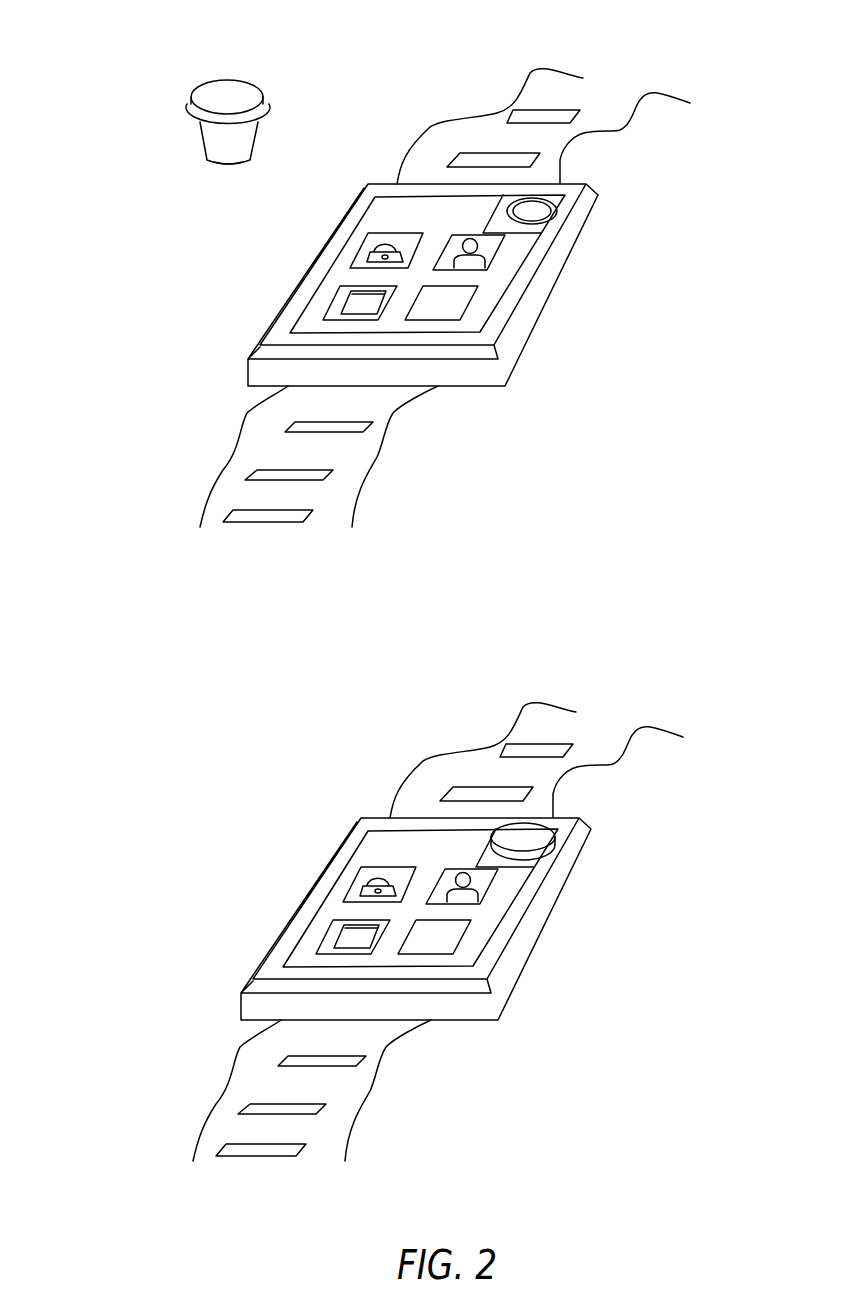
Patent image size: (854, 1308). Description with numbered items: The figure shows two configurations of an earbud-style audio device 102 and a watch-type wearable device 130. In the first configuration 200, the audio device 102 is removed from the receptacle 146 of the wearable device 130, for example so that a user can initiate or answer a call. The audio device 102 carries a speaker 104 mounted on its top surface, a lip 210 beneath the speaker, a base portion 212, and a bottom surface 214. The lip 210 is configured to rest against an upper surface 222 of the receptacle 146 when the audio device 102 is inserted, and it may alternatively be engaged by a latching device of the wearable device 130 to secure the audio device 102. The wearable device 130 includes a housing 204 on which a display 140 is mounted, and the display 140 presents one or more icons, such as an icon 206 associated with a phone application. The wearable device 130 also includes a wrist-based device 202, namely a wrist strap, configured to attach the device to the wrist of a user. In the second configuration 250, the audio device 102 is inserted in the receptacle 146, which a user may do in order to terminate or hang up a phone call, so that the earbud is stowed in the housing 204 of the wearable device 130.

The first configuration 200 is at (132, 42).
The second configuration 250 is at (295, 737).
The audio device 102 is at (383, 452).
The speaker 104 is at (242, 108).
The lip 210 is at (190, 100).
The base portion 212 is at (202, 138).
The bottom surface 214 is at (230, 163).
The wearable device 130 is at (652, 177).
The upper surface 222 is at (557, 212).
The receptacle 146 is at (548, 223).
The display 140 is at (520, 260).
The housing 204 is at (528, 347).
The icon 206 is at (360, 253).
The wrist-based device 202 is at (387, 440).